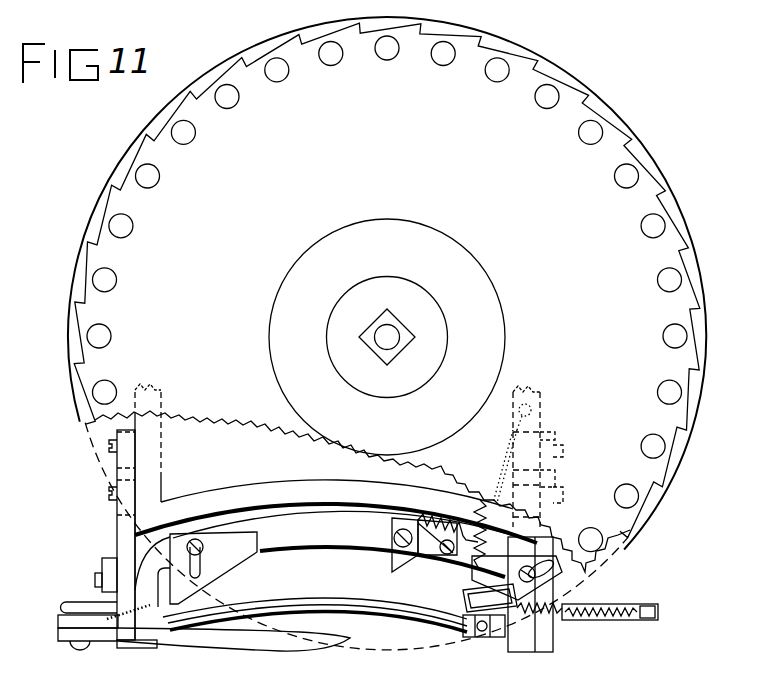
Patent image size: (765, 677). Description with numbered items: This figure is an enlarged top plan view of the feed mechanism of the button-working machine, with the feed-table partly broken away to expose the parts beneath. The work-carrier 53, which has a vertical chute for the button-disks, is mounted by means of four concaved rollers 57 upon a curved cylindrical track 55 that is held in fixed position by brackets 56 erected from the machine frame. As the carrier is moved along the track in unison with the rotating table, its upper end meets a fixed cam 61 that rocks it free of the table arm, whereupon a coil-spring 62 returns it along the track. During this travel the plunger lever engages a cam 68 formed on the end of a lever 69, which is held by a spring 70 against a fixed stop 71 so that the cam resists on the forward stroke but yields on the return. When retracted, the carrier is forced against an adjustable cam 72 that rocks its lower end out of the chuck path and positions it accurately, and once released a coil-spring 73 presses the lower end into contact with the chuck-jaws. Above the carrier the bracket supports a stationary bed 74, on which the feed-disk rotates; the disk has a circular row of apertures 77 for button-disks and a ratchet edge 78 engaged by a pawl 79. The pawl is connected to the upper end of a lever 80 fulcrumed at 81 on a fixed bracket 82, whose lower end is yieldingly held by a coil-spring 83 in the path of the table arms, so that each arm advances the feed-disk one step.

The work-carrier 53 is at (465, 593).
The track 55 is at (314, 600).
The brackets 56 is at (153, 448).
The concaved rollers 57 is at (478, 632).
The fixed cam 61 is at (237, 553).
The coil-spring 62 is at (606, 618).
The cam 68 is at (409, 552).
The lever 69 is at (412, 520).
The spring 70 is at (449, 521).
The fixed stop 71 is at (448, 516).
The adjustable cam 72 is at (517, 578).
The coil-spring 73 is at (487, 537).
The stationary table or bed 74 is at (122, 156).
The apertures 77 is at (150, 178).
The ratchet edge 78 is at (74, 320).
The pawl 79 is at (222, 640).
The lever 80 is at (66, 621).
The fulcrum 81 is at (75, 647).
The fixed bracket 82 is at (103, 580).
The coil-spring 83 is at (122, 616).